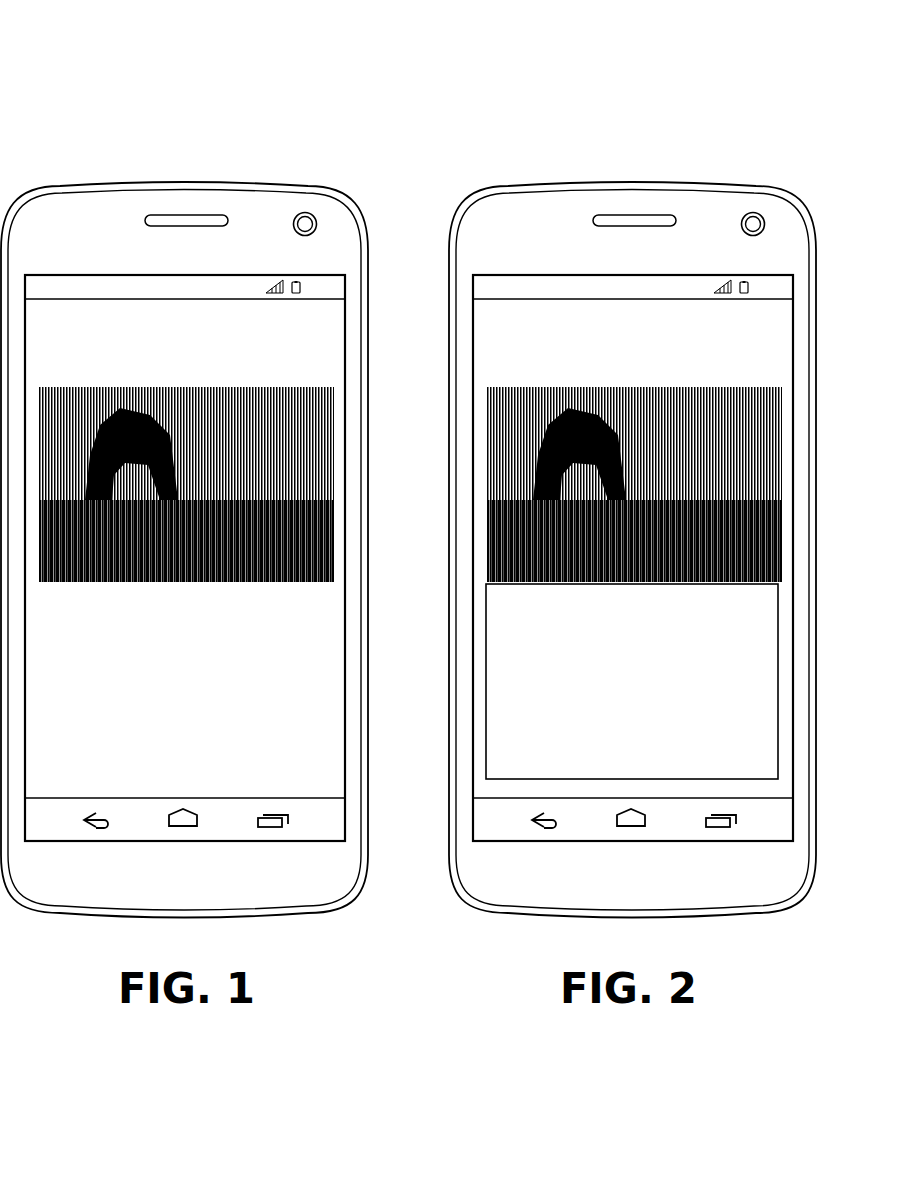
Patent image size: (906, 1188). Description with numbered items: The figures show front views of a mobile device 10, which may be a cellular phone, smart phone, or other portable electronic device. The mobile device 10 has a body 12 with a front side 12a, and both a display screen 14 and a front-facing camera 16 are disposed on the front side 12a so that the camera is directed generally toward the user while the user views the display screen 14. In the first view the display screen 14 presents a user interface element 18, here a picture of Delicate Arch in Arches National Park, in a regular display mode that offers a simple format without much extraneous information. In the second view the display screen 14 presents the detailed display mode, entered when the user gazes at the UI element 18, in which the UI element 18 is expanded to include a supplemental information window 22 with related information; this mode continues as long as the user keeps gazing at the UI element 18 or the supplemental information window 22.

In FIG. 1, the mobile device 10 is at (185, 125).
In FIG. 2, the mobile device 10 is at (605, 476).
In FIG. 1, the body 12 is at (93, 184).
In FIG. 2, the body 12 is at (632, 502).
In FIG. 1, the front side 12a is at (252, 876).
In FIG. 1, the display screen 14 is at (346, 351).
In FIG. 2, the display screen 14 is at (594, 558).
In FIG. 1, the front-facing camera 16 is at (301, 212).
In FIG. 2, the front-facing camera 16 is at (765, 178).
In FIG. 1, the user interface element 18 is at (315, 452).
In FIG. 2, the user interface element 18 is at (634, 462).
In FIG. 2, the supplemental information window 22 is at (586, 685).